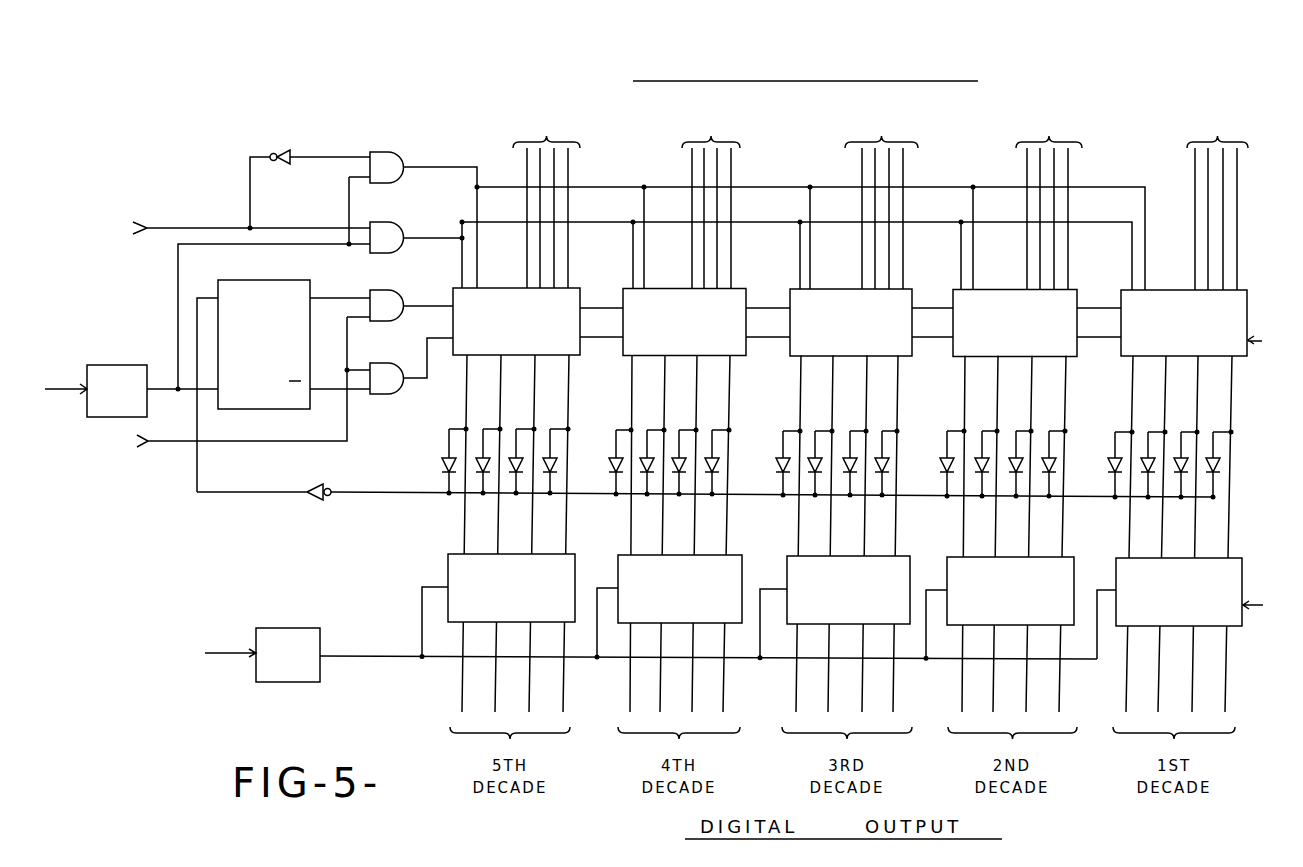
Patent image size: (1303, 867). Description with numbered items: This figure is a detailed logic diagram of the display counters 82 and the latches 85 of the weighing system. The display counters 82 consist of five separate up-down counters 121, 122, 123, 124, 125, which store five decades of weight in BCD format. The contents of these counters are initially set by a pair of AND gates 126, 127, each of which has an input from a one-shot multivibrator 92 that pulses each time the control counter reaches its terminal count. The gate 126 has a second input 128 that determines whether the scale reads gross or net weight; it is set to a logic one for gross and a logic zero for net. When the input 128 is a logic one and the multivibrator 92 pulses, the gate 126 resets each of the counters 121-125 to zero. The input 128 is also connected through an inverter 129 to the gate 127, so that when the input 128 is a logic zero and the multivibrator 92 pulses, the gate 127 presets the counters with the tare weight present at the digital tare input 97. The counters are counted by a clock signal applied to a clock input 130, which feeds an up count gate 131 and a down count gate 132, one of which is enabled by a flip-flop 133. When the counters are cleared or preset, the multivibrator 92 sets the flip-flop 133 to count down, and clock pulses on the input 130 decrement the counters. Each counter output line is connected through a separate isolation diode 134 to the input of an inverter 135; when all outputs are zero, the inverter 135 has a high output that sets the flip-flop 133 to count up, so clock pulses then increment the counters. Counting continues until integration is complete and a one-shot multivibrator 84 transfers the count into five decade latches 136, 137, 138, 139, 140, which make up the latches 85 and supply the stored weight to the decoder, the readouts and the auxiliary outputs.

The one-shot multivibrator 92 is at (155, 358).
The second input 128 is at (189, 226).
The inverter 129 is at (289, 149).
The AND gate 127 is at (403, 179).
The AND gate 126 is at (402, 252).
The up count gate 131 is at (397, 298).
The down count gate 132 is at (387, 394).
The flip-flop 133 is at (313, 290).
The clock input 130 is at (163, 445).
The inverter 135 is at (306, 500).
The isolation diode 134 is at (443, 464).
The up-down counter 125 is at (582, 293).
The up-down counter 124 is at (746, 293).
The up-down counter 123 is at (913, 295).
The up-down counter 122 is at (1077, 295).
The up-down counter 121 is at (1246, 293).
The display counters 82 is at (1265, 348).
The digital tare input 97 is at (882, 175).
The decade latch 140 is at (576, 560).
The decade latch 139 is at (742, 560).
The decade latch 138 is at (906, 559).
The decade latch 137 is at (1074, 560).
The decade latch 136 is at (1242, 561).
The latches 85 is at (1259, 617).
The one-shot multivibrator 84 is at (304, 628).